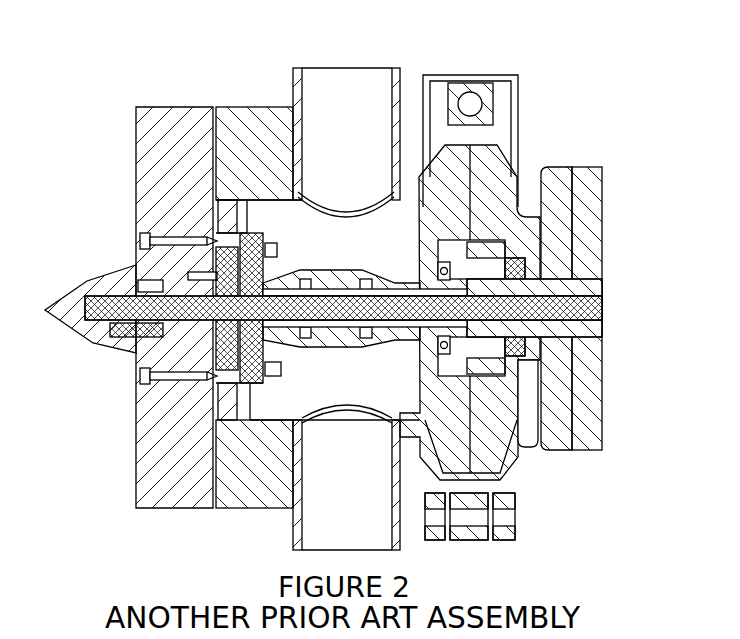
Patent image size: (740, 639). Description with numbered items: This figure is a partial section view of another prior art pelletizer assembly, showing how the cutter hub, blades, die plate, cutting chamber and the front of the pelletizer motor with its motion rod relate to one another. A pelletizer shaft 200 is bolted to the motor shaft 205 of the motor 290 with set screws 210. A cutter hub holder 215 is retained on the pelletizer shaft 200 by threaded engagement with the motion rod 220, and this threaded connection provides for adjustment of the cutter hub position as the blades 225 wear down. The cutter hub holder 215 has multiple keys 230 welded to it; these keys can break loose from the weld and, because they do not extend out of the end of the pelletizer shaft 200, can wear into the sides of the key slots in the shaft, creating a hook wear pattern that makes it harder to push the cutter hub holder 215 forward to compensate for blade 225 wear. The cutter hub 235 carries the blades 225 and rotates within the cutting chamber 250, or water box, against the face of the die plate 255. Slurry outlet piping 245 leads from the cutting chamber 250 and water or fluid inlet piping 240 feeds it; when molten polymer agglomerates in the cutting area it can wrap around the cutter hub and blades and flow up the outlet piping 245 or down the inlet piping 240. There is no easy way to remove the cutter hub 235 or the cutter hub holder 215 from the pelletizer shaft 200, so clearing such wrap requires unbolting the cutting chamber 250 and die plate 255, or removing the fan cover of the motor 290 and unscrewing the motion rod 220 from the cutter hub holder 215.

The pelletizer shaft 200 is at (406, 277).
The motor shaft 205 is at (552, 276).
The set screws 210 is at (522, 258).
The cutter hub holder 215 is at (299, 268).
The motion rod 220 is at (444, 283).
The blades 225 is at (270, 237).
The keys 230 is at (339, 268).
The cutter hub 235 is at (253, 226).
The water or fluid inlet piping 240 is at (293, 536).
The slurry outlet piping 245 is at (394, 72).
The cutting chamber 250 is at (232, 107).
The die plate 255 is at (138, 105).
The motor 290 is at (604, 165).